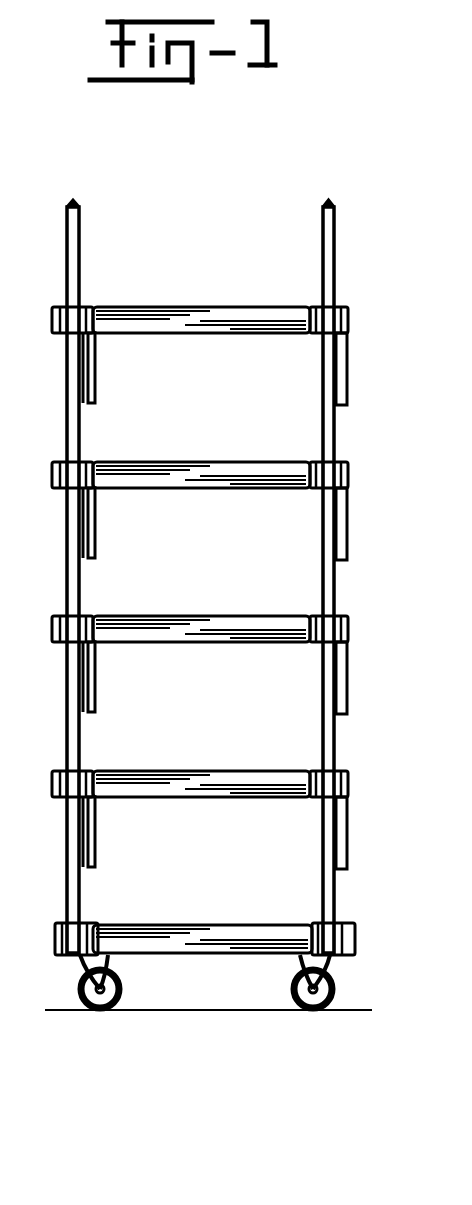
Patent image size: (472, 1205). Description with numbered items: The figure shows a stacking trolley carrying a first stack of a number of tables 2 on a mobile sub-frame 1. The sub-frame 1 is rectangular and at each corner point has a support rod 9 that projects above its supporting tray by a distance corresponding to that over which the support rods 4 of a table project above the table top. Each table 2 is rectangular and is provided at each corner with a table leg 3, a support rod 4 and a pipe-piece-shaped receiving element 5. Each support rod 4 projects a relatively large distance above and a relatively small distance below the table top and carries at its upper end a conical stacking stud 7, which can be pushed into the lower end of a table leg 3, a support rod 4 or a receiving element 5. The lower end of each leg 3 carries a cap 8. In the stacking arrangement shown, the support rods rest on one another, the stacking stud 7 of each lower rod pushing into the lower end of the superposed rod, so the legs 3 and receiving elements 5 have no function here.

The mobile sub-frame 1 is at (243, 940).
The table 2 is at (215, 333).
The table leg 3 is at (95, 845).
The support rod 4 is at (82, 750).
The receiving element 5 is at (73, 615).
The conical stacking stud 7 is at (77, 206).
The cap 8 is at (345, 718).
The support rod 9 is at (337, 912).